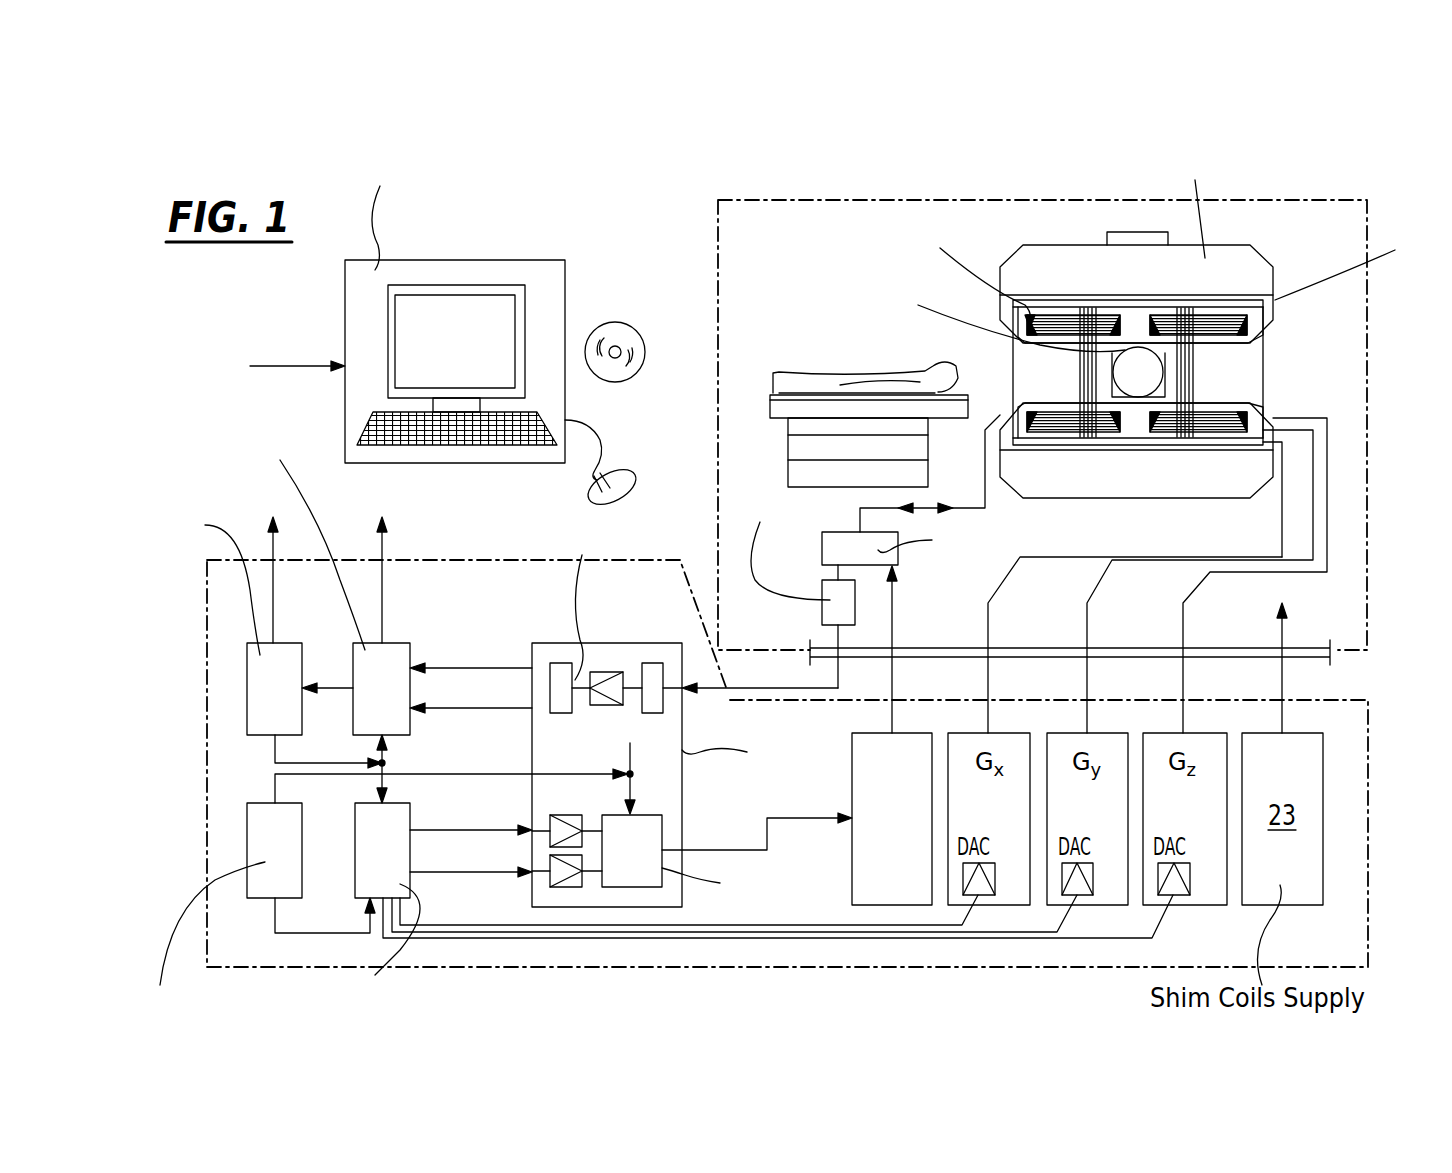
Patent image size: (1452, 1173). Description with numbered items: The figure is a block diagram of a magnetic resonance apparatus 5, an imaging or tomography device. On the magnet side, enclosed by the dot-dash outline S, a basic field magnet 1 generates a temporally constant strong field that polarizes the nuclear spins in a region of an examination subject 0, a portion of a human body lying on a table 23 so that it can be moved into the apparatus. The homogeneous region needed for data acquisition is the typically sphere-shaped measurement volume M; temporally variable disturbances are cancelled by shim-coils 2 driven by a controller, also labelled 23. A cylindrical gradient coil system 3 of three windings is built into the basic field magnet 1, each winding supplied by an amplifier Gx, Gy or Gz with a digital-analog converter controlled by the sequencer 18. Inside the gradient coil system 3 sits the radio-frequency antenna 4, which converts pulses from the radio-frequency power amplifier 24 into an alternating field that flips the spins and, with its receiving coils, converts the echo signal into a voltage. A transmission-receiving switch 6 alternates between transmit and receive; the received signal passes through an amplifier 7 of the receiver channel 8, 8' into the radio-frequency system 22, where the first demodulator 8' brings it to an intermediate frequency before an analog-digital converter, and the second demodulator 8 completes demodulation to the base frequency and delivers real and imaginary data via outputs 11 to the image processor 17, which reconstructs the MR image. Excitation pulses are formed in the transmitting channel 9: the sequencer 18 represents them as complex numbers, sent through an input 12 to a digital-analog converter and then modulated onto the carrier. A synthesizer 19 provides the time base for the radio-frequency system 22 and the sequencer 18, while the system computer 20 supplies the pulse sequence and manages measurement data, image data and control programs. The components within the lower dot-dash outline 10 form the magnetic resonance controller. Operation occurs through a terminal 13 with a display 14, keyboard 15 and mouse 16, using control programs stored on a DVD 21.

The examination subject 0 is at (882, 385).
The basic field magnet 1 is at (1250, 265).
The shim-coils 2 is at (1275, 300).
The gradient coil system 3 is at (1010, 328).
The radio-frequency antenna 4 is at (1112, 382).
The magnetic resonance apparatus 5 is at (688, 248).
The transmission-receiving switch 6 is at (822, 545).
The amplifier 7 is at (822, 605).
The second demodulator 8 is at (557, 658).
The first demodulator 8' is at (648, 658).
The transmitting channel 9 is at (648, 812).
The dot-dash outline 10 is at (352, 560).
The outputs 11 is at (532, 708).
The input 12 is at (532, 872).
The terminal 13 is at (515, 260).
The display 14 is at (455, 295).
The keyboard 15 is at (455, 448).
The mouse 16 is at (625, 478).
The image processor 17 is at (395, 640).
The sequencer 18 is at (412, 818).
The synthesizer 19 is at (258, 800).
The system computer 20 is at (290, 640).
The DVD 21 is at (615, 323).
The radio-frequency system 22 is at (600, 640).
The table 23 is at (788, 445).
The radio-frequency power amplifier 24 is at (907, 875).
The measurement volume M is at (1155, 370).
The scanner S is at (835, 200).